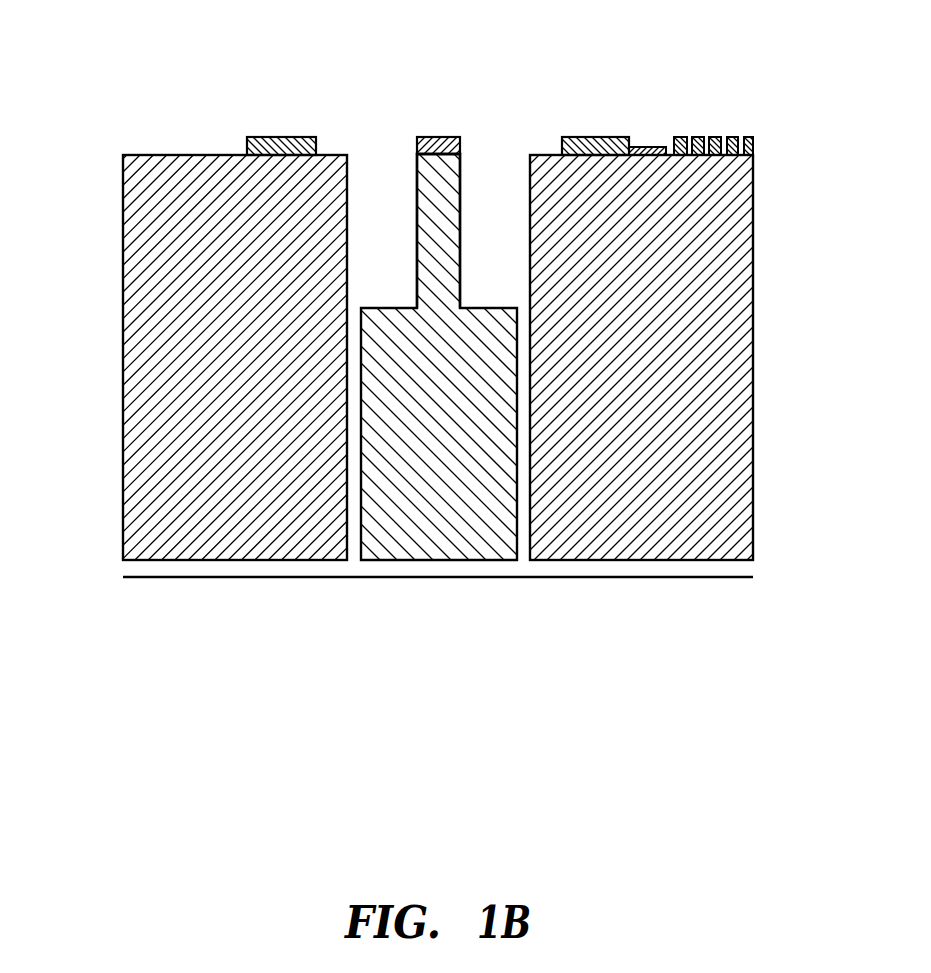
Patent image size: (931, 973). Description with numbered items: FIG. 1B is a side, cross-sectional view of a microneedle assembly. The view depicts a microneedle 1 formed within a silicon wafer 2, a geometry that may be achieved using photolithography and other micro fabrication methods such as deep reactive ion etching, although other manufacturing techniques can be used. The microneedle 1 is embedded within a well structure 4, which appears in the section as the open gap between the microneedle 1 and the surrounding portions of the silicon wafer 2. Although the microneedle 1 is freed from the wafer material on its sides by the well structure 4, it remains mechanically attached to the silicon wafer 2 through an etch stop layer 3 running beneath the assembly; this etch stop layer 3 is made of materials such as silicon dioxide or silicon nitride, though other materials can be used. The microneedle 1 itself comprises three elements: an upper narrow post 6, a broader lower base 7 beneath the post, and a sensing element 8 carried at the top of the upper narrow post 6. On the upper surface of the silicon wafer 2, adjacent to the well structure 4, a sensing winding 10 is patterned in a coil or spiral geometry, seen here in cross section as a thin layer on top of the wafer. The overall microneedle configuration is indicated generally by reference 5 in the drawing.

The microneedle 1 is at (438, 82).
The silicon wafer 2 is at (752, 244).
The etch stop layer 3 is at (733, 568).
The well structure 4 is at (382, 200).
The semiconductor device 5 is at (123, 60).
The upper narrow post 6 is at (458, 185).
The lower base 7 is at (491, 318).
The sensing element 8 is at (450, 137).
The sensing winding 10 is at (270, 140).